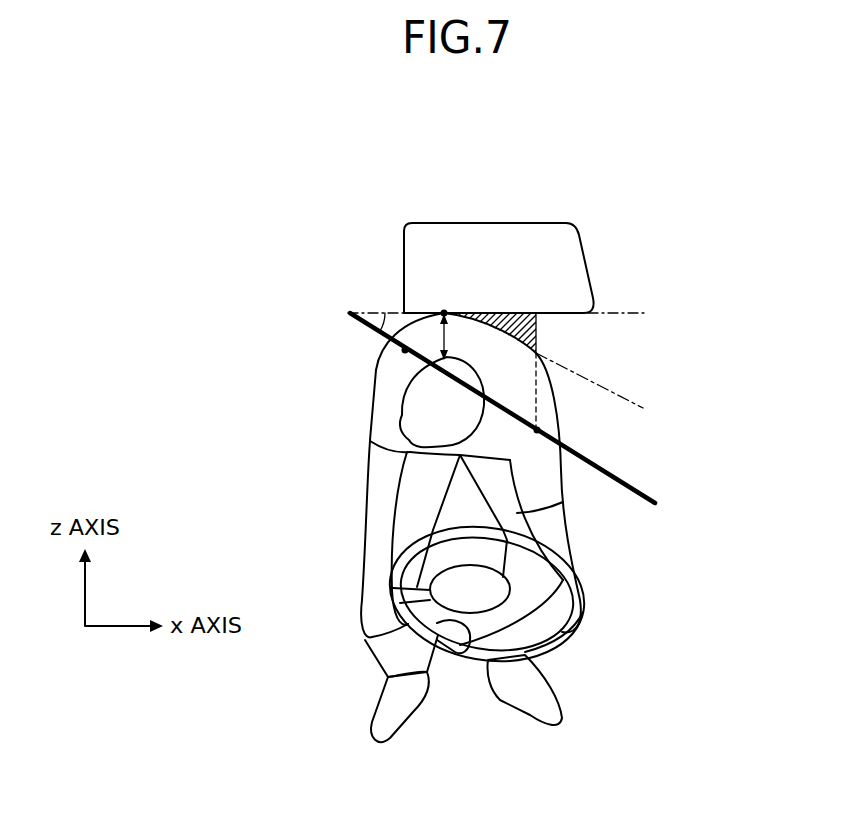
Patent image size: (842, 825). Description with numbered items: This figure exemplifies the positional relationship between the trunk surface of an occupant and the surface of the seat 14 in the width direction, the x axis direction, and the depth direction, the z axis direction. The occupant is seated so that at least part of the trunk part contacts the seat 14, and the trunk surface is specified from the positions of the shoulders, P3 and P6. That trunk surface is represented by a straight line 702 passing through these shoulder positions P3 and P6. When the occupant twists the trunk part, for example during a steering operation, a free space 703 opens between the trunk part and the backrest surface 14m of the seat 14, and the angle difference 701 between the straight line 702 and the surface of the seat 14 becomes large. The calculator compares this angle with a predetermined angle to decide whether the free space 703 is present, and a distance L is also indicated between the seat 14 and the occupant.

The seat 14 is at (542, 214).
The backrest surface 14m is at (444, 310).
The angle difference 701 is at (383, 320).
The straight line 702 is at (632, 492).
The free space 703 is at (543, 328).
The distance between reference point and head top L is at (444, 340).
The shoulder position P3 is at (405, 350).
The shoulder position P6 is at (537, 430).